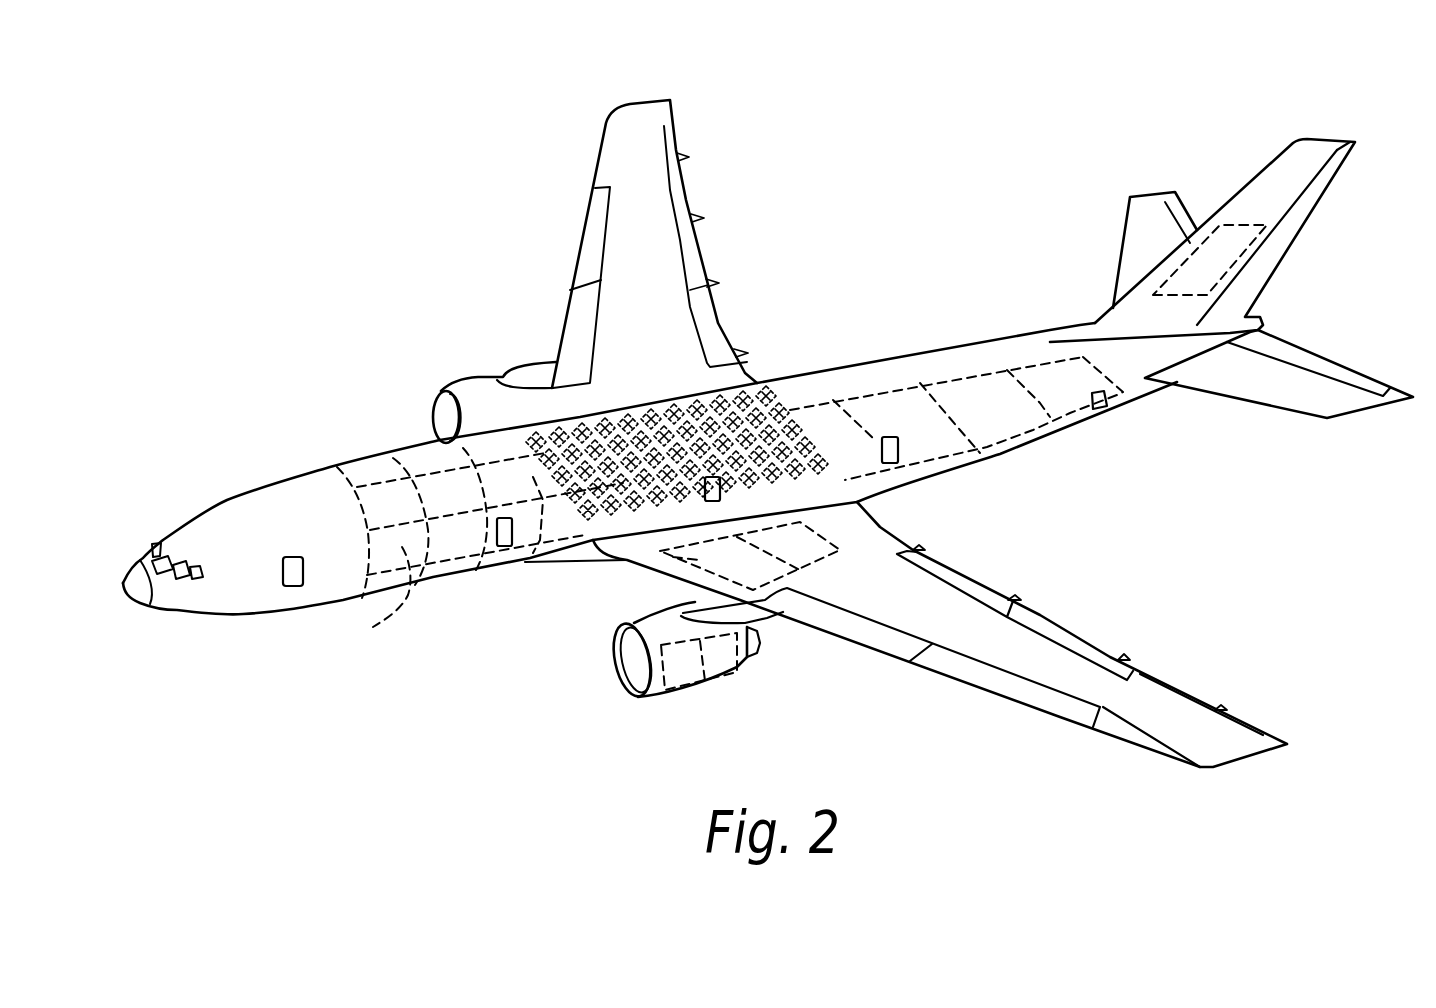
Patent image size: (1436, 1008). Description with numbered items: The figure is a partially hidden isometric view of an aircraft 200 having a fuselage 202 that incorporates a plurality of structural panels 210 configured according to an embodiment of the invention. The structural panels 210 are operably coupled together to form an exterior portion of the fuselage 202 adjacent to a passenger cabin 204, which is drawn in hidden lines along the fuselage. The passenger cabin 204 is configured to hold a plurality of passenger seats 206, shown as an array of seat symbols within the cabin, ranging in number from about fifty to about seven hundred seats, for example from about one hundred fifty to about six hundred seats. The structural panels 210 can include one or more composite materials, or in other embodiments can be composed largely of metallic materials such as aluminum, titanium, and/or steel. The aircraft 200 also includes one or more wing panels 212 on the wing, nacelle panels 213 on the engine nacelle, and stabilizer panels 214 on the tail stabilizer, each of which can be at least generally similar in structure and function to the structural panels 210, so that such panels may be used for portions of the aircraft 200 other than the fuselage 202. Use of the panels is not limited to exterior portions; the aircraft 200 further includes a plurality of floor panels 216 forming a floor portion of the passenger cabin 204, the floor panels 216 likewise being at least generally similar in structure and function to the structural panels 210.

The aircraft 200 is at (331, 234).
The fuselage 202 is at (258, 493).
The passenger cabin 204 is at (498, 458).
The passenger seats 206 is at (681, 410).
The structural panels 210 is at (362, 598).
The wing panels 212 is at (672, 557).
The nacelle panels 213 is at (690, 667).
The stabilizer panels 214 is at (1220, 245).
The floor panels 216 is at (980, 453).